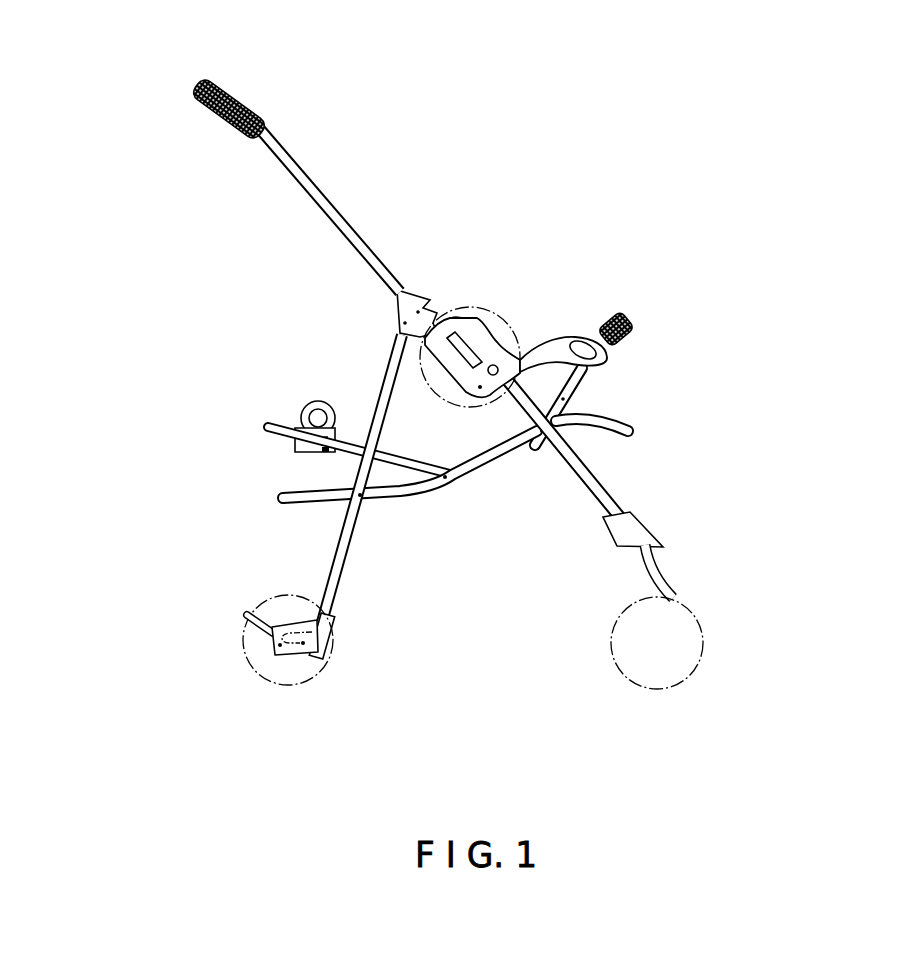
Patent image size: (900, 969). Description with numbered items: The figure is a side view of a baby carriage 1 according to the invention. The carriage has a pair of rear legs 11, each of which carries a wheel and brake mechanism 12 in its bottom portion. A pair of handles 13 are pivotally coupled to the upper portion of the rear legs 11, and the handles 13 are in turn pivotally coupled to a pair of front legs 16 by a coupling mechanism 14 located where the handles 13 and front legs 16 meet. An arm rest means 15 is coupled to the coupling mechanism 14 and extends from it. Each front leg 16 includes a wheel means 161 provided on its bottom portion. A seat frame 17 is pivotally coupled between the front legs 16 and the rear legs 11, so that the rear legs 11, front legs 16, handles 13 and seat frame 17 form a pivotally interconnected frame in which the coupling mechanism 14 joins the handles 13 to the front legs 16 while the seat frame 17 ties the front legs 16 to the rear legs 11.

The baby carriage 1 is at (237, 370).
The rear legs 11 is at (337, 550).
The wheel and brake mechanism 12 is at (245, 663).
The handles 13 is at (297, 163).
The coupling mechanism 14 is at (475, 308).
The arm rest means 15 is at (628, 318).
The front legs 16 is at (607, 492).
The wheel means 161 is at (697, 640).
The seat frame 17 is at (469, 470).